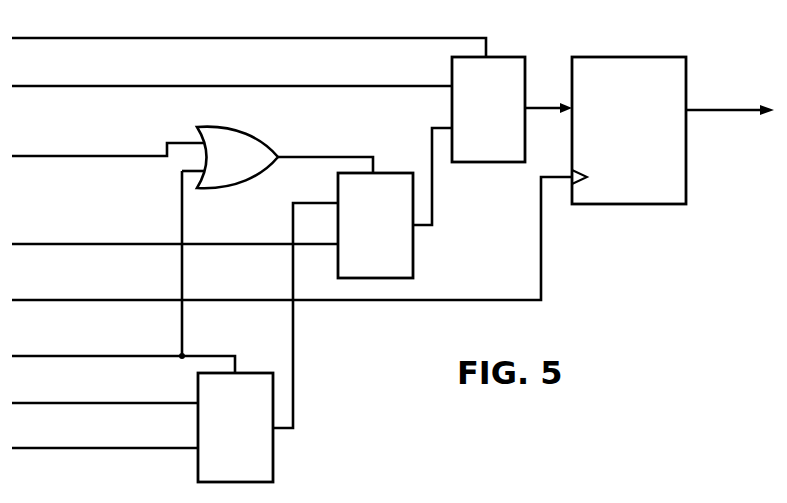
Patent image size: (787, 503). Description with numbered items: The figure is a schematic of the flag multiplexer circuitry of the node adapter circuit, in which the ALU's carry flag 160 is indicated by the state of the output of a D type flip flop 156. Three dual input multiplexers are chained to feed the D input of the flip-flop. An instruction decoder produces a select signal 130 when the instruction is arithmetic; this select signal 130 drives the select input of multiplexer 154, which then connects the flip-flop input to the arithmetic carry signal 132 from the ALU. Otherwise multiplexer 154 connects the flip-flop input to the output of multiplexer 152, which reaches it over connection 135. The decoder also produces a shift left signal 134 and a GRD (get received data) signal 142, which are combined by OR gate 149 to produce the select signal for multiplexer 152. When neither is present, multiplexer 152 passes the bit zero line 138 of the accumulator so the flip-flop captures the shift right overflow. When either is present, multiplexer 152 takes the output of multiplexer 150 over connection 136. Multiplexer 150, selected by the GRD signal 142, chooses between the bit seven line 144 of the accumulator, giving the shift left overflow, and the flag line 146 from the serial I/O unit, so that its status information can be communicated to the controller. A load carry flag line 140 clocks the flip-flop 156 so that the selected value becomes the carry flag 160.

The select signal 130 is at (316, 38).
The arithmetic carry signal 132 is at (316, 86).
The shift left signal 134 is at (142, 156).
The multiplexer output connection line 135 is at (432, 185).
The multiplexer output connection line 136 is at (293, 203).
The bit zero line 138 is at (222, 244).
The load carry flag signal line 140 is at (270, 300).
The GRD (get received data) signal 142 is at (204, 356).
The bit seven line 144 is at (110, 448).
The flag line 146 is at (112, 403).
The OR gate 149 is at (222, 127).
The multiplexer 150 is at (252, 425).
The multiplexer 152 is at (390, 220).
The dual input multiplexer 154 is at (504, 103).
The D type flip flop 156 is at (644, 101).
The carry flag 160 is at (730, 110).